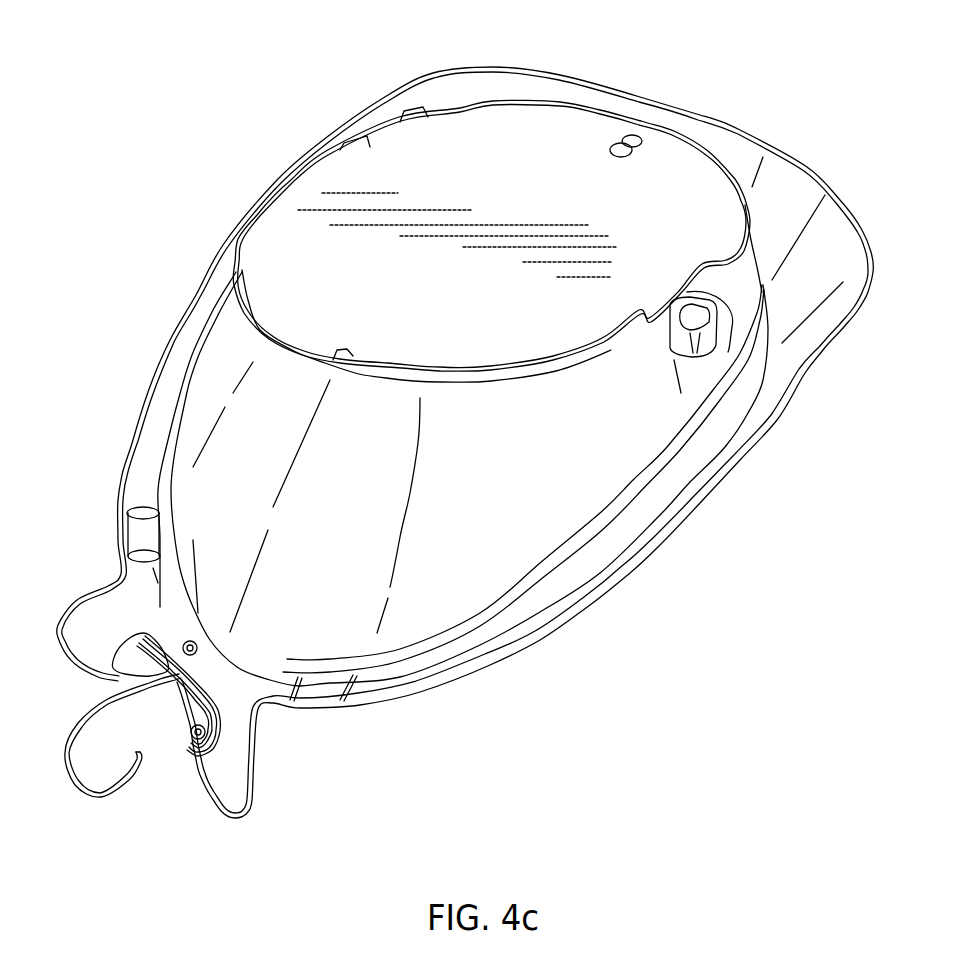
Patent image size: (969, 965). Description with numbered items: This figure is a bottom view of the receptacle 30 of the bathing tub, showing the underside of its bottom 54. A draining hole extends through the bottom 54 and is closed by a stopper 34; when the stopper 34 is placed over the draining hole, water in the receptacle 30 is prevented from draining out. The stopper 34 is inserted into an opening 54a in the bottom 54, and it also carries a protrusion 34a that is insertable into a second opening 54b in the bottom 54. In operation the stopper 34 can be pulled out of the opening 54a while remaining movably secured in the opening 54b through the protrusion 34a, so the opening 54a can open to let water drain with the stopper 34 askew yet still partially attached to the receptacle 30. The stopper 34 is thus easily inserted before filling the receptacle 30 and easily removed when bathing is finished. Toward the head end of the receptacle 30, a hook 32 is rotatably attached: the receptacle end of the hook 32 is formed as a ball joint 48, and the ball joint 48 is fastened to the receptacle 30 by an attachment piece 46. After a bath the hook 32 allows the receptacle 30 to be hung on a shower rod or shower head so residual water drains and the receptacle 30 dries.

The receptacle 30 is at (635, 617).
The hook 32 is at (103, 793).
The stopper 34 is at (632, 138).
The protrusion 34a is at (614, 143).
The attachment piece 46 is at (143, 668).
The ball joint 48 is at (167, 688).
The bottom 54 is at (297, 232).
The opening 54a is at (640, 148).
The second opening 54b is at (613, 152).